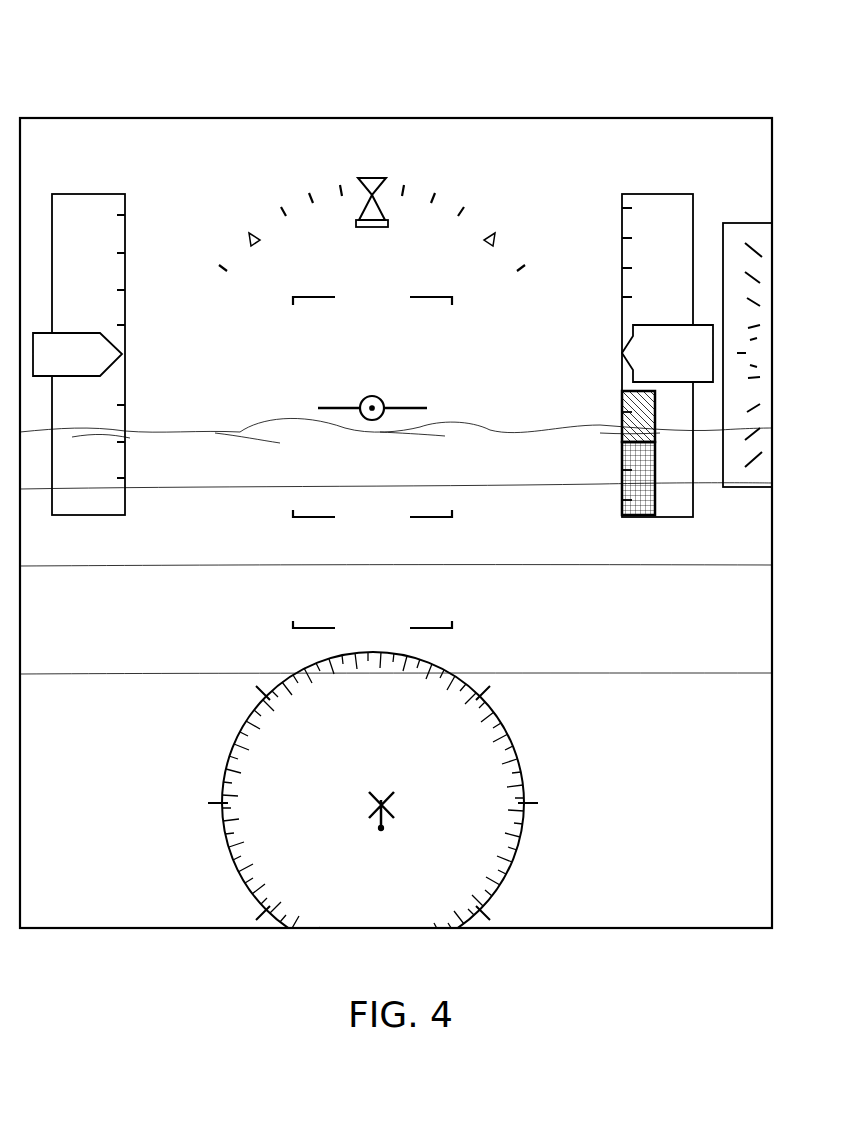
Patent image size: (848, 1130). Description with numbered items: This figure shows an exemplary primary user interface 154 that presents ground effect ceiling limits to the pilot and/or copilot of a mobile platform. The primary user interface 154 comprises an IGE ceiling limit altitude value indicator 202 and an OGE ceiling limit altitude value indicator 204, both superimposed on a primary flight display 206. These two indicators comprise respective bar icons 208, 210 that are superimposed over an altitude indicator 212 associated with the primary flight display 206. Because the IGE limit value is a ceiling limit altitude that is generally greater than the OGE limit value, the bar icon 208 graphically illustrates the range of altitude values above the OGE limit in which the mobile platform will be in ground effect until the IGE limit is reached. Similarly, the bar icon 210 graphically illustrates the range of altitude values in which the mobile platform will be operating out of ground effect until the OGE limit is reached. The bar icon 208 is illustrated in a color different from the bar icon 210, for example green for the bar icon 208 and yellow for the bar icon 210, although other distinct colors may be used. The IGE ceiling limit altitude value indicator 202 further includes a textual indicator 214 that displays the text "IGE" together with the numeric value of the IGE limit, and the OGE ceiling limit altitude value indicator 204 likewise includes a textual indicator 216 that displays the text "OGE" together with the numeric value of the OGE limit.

The primary user interface 154 is at (659, 104).
The primary flight display 206 is at (262, 117).
The altitude indicator 212 is at (657, 193).
The IGE ceiling limit altitude value indicator 202 is at (626, 387).
The textual indicator 214 is at (592, 400).
The bar icon 208 is at (620, 432).
The textual indicator 216 is at (585, 466).
The OGE ceiling limit altitude value indicator 204 is at (620, 494).
The bar icon 210 is at (628, 519).